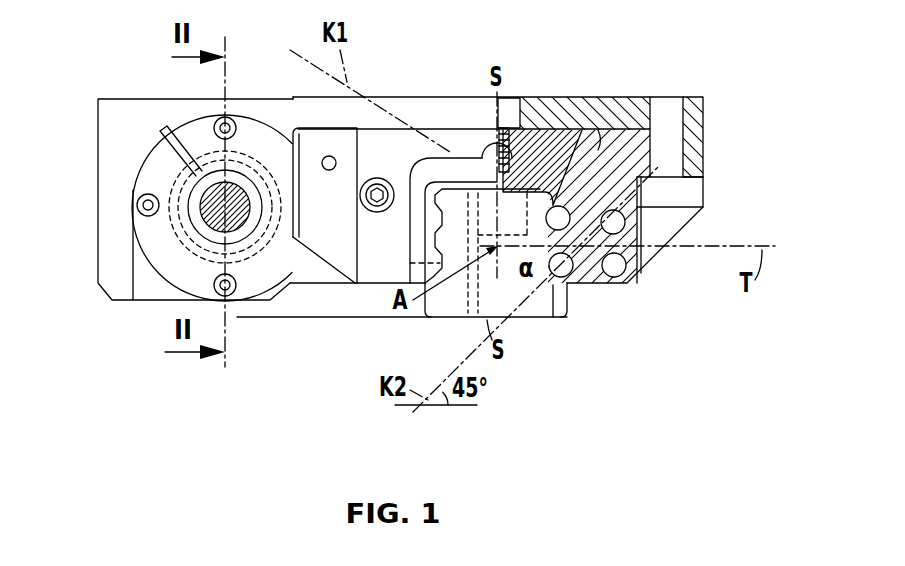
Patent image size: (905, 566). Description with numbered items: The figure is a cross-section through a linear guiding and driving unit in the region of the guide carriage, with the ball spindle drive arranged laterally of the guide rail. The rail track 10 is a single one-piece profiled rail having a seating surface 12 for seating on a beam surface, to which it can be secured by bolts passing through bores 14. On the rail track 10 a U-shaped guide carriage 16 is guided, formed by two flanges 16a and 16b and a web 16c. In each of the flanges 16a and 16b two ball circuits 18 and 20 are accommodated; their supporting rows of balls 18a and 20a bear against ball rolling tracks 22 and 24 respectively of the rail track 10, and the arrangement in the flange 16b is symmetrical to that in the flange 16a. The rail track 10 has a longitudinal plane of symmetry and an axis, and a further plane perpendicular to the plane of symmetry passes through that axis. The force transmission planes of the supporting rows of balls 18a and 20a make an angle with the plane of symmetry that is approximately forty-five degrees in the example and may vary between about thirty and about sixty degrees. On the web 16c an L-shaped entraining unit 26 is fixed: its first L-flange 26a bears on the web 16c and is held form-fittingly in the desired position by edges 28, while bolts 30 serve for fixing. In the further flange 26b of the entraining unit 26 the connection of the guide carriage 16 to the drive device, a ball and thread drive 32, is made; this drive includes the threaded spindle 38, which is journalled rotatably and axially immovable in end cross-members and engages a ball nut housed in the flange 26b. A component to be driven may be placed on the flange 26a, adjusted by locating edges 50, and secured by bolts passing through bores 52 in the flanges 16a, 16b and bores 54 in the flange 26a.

The rail track 10 is at (410, 360).
The seating surface 12 is at (470, 290).
The bores 14 is at (479, 319).
The guide carriage 16 is at (716, 156).
The flange 16a is at (703, 182).
The flange 16b is at (370, 270).
The web 16c is at (462, 148).
The ball circuit 18 is at (632, 223).
The supporting row of balls 18a is at (606, 125).
The ball circuit 20 is at (623, 283).
The supporting row of balls 20a is at (567, 285).
The ball rolling track 22 is at (510, 167).
The ball rolling track 24 is at (546, 320).
The entraining unit 26 is at (580, 90).
The first L-flange 26a is at (703, 103).
The further flange 26b is at (98, 222).
The edges 28 is at (555, 97).
The bolts 30 is at (510, 97).
The ball and thread drive 32 is at (152, 283).
The threaded spindle 38 is at (162, 183).
The locating edges 50 is at (293, 96).
The bores 52 is at (692, 206).
The bores 54 is at (673, 97).